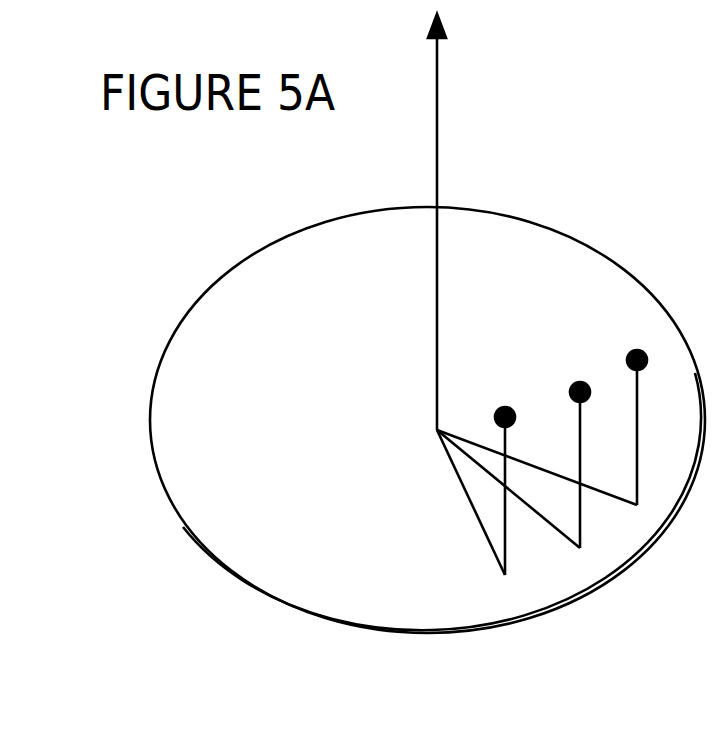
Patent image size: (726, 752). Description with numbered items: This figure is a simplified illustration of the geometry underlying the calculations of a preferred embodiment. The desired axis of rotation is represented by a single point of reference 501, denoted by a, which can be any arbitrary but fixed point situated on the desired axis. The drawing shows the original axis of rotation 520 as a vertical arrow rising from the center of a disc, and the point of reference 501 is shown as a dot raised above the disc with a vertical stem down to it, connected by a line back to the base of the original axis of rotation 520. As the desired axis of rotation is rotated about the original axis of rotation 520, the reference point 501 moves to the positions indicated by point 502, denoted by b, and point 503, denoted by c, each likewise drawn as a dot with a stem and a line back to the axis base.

The original axis of rotation 520 is at (437, 130).
The point of reference 501 is at (627, 337).
The point 502 is at (572, 373).
The point 503 is at (503, 397).